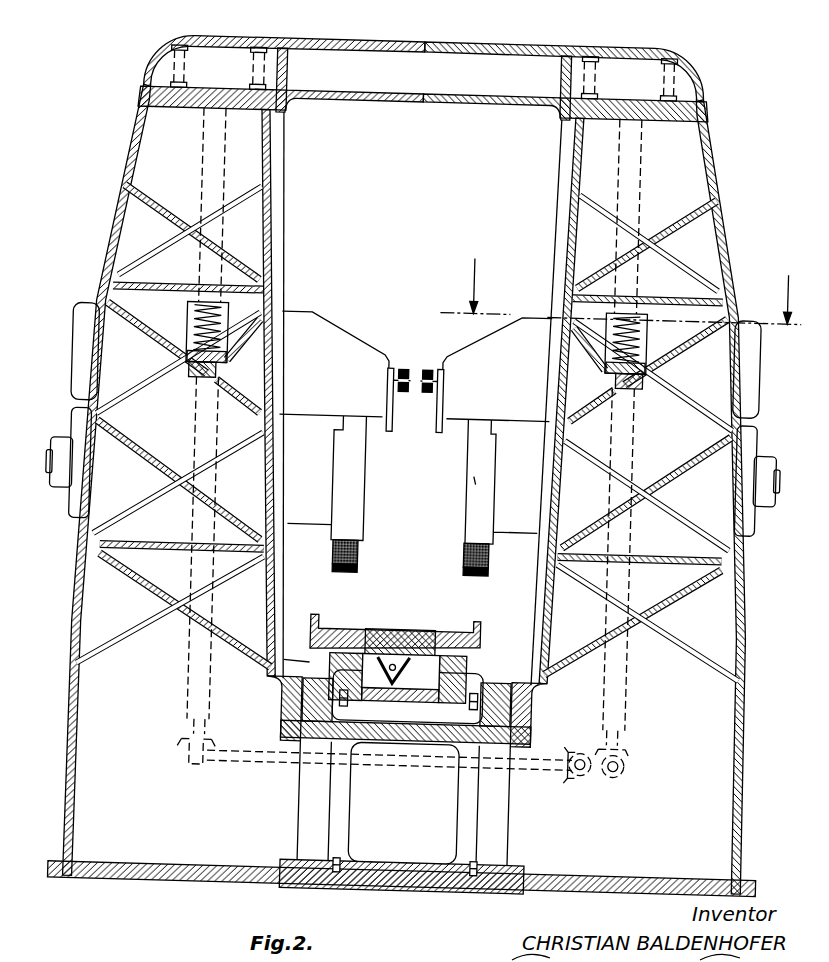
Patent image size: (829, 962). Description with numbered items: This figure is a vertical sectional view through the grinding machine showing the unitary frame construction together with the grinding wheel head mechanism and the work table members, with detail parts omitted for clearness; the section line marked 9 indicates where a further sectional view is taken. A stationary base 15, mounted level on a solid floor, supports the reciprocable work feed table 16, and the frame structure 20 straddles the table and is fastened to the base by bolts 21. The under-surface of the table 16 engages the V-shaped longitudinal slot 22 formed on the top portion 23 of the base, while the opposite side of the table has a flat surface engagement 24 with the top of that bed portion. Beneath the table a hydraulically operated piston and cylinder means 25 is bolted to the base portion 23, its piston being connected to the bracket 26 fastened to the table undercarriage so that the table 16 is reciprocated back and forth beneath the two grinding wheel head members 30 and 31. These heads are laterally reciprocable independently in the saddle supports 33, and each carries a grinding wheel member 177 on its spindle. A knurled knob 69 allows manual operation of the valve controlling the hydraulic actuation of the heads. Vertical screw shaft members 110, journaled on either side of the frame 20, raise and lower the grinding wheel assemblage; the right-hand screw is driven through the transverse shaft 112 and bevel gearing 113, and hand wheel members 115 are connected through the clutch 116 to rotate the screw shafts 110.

The section line 9- 9 is at (621, 291).
The stationary base 15 is at (478, 825).
The reciprocable table 16 is at (401, 633).
The frame structure 20 is at (77, 697).
The bolts 21 is at (483, 700).
The V-shaped longitudinal slot 22 is at (461, 672).
The top portion 23 is at (446, 677).
The flat surface engagement 24 is at (331, 671).
The hydraulically operated piston and cylinder means 25 is at (361, 687).
The bracket 26 is at (394, 691).
The grinding wheel head member 30 is at (306, 528).
The grinding wheel head member 31 is at (526, 517).
The saddle supports 33 is at (341, 342).
The knurled knob 69 is at (410, 372).
The vertical screw shaft members 110 is at (196, 483).
The transverse shaft 112 is at (418, 767).
The bevel gearing 113 is at (208, 766).
The hand wheel members 115 is at (627, 779).
The clutch 116 is at (575, 789).
The grinding wheel member 177 is at (471, 562).